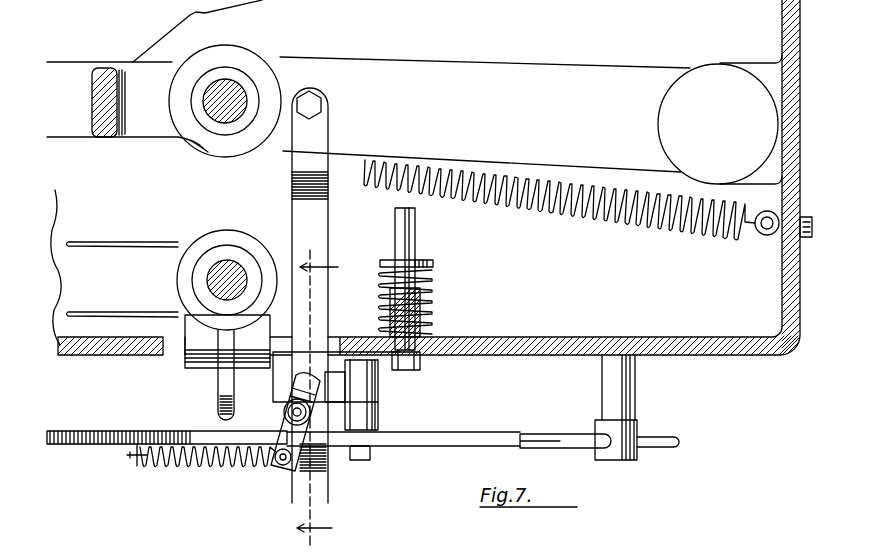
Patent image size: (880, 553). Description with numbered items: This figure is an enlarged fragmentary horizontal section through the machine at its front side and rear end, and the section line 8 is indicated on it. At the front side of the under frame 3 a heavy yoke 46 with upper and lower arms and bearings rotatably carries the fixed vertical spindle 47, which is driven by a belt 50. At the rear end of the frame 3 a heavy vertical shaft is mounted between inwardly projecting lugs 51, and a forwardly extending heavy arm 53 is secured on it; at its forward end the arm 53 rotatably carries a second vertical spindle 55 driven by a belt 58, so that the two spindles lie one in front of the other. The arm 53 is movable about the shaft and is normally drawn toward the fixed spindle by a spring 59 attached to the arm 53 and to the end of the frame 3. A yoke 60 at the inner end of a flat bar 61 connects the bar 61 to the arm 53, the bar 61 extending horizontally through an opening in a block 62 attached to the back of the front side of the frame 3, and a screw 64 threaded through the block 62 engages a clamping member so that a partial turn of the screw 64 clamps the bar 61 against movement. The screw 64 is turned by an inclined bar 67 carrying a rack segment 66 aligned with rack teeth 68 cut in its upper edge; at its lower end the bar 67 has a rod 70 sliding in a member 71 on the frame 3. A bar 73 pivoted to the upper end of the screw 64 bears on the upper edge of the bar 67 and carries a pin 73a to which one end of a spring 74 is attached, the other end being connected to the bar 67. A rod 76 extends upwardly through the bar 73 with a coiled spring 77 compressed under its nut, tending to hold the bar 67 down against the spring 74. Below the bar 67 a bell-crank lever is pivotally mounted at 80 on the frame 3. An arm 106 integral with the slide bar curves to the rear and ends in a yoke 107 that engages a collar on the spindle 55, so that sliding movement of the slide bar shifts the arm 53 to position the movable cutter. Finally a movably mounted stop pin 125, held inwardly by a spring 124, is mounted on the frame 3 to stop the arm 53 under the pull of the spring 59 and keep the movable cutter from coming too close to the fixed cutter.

The under frame 3 is at (727, 343).
The section line 8 is at (317, 387).
The yoke 46 is at (215, 347).
The vertical spindle 47 is at (208, 280).
The belt 50 is at (127, 243).
The lugs 51 is at (757, 67).
The arm 53 is at (550, 85).
The vertical spindle 55 is at (232, 93).
The belt 58 is at (70, 142).
The spring 59 is at (570, 203).
The yoke 60 is at (317, 145).
The flat bar 61 is at (322, 290).
The block 62 is at (285, 372).
The screw 64 is at (328, 385).
The rack segment 66 is at (66, 445).
The bar 67 is at (440, 437).
The rack teeth 68 is at (153, 431).
The rod 70 is at (555, 436).
The member 71 is at (613, 420).
The bar 73 is at (283, 470).
The pin 73a is at (277, 467).
The spring 74 is at (222, 466).
The rod 76 is at (327, 408).
The coiled spring 77 is at (308, 450).
The pivot 80 is at (357, 461).
The arm 106 is at (140, 123).
The yoke 107 is at (187, 147).
The spring 124 is at (387, 305).
The stop pin 125 is at (410, 243).